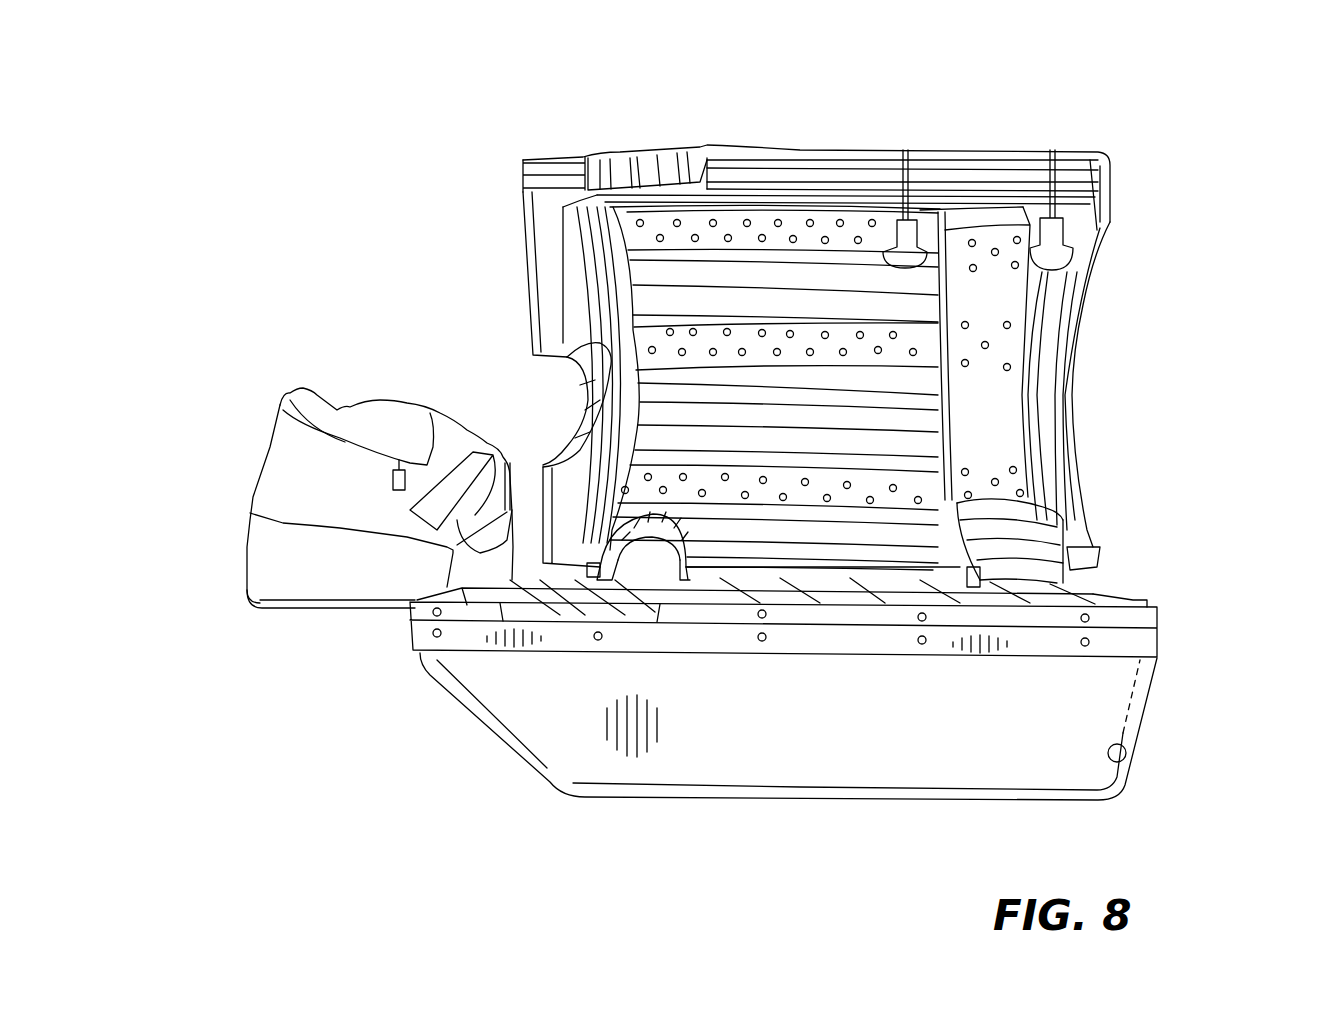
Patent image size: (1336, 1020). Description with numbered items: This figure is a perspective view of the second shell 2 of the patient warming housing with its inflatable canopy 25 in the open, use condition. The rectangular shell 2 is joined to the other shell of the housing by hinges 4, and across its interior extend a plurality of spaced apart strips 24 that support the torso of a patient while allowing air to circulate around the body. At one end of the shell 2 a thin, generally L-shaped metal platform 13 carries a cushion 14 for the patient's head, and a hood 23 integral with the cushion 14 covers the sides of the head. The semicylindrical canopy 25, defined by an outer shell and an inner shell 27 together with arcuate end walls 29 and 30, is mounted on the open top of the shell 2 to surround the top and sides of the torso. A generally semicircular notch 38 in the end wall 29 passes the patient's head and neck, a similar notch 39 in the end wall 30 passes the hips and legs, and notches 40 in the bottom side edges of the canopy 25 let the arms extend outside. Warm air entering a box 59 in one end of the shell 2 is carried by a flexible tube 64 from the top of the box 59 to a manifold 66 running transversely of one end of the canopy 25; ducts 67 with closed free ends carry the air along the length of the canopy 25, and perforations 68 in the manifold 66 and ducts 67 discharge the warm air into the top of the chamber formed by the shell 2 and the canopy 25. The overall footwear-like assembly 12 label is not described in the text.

The shell 2 is at (733, 800).
The hinges 4 is at (1160, 610).
The footwear assembly 12 is at (268, 635).
The platform 13 is at (333, 610).
The cushion 14 is at (267, 570).
The hood 23 is at (363, 422).
The strips 24 is at (630, 600).
The canopy 25 is at (1155, 178).
The inner shell 27 is at (780, 250).
The end wall 29 is at (548, 257).
The end wall 30 is at (1033, 442).
The notch 38 is at (587, 415).
The notch 39 is at (1053, 300).
The notches 40 is at (627, 168).
The box 59 is at (1090, 590).
The flexible tube 64 is at (1033, 530).
The manifold 66 is at (962, 427).
The ducts 67 is at (850, 223).
The perforations 68 is at (660, 242).